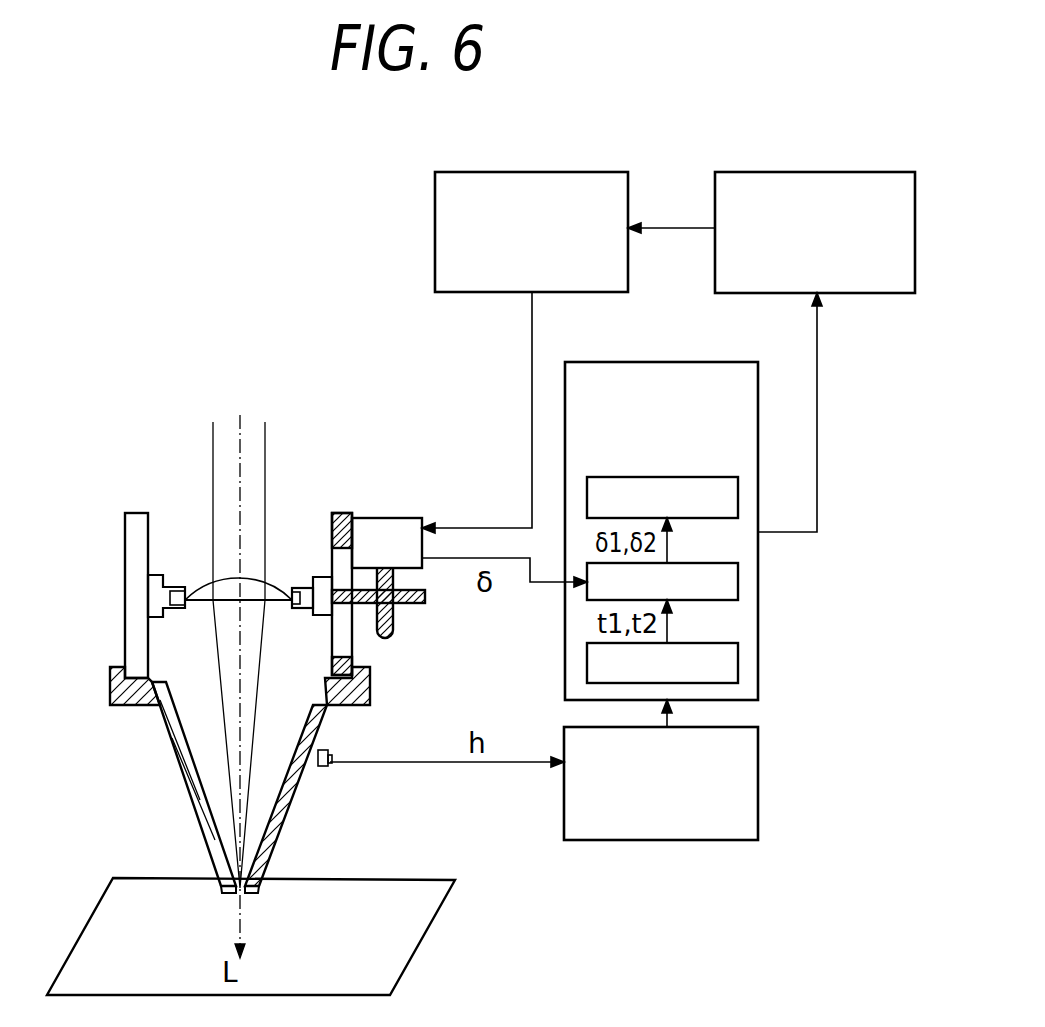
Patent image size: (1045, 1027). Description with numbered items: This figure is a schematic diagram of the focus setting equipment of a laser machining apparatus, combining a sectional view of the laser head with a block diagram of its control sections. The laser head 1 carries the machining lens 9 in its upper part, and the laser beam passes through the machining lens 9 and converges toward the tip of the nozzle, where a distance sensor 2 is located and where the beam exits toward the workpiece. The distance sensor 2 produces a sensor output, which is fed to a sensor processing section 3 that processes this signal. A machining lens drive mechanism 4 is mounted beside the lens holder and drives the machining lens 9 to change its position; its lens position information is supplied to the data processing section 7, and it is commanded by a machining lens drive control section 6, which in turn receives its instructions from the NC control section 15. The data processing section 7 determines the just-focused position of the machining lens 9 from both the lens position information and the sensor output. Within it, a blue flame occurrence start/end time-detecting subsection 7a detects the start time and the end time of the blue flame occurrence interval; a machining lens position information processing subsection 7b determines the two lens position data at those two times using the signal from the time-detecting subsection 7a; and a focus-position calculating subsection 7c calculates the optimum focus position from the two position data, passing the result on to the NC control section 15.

The nozzle 1 is at (290, 815).
The distance sensor 2 is at (250, 893).
The sensor processing section 3 is at (758, 805).
The machining lens drive mechanism 4 is at (380, 530).
The machining lens drive control section 6 is at (563, 171).
The data processing section 7 is at (760, 402).
The blue flame occurrence start/end time-detecting subsection 7a is at (738, 666).
The machining lens position information processing subsection 7b is at (738, 581).
The focus-position calculating subsection 7c is at (740, 492).
The machining lens 9 is at (201, 585).
The NC control section 15 is at (857, 171).